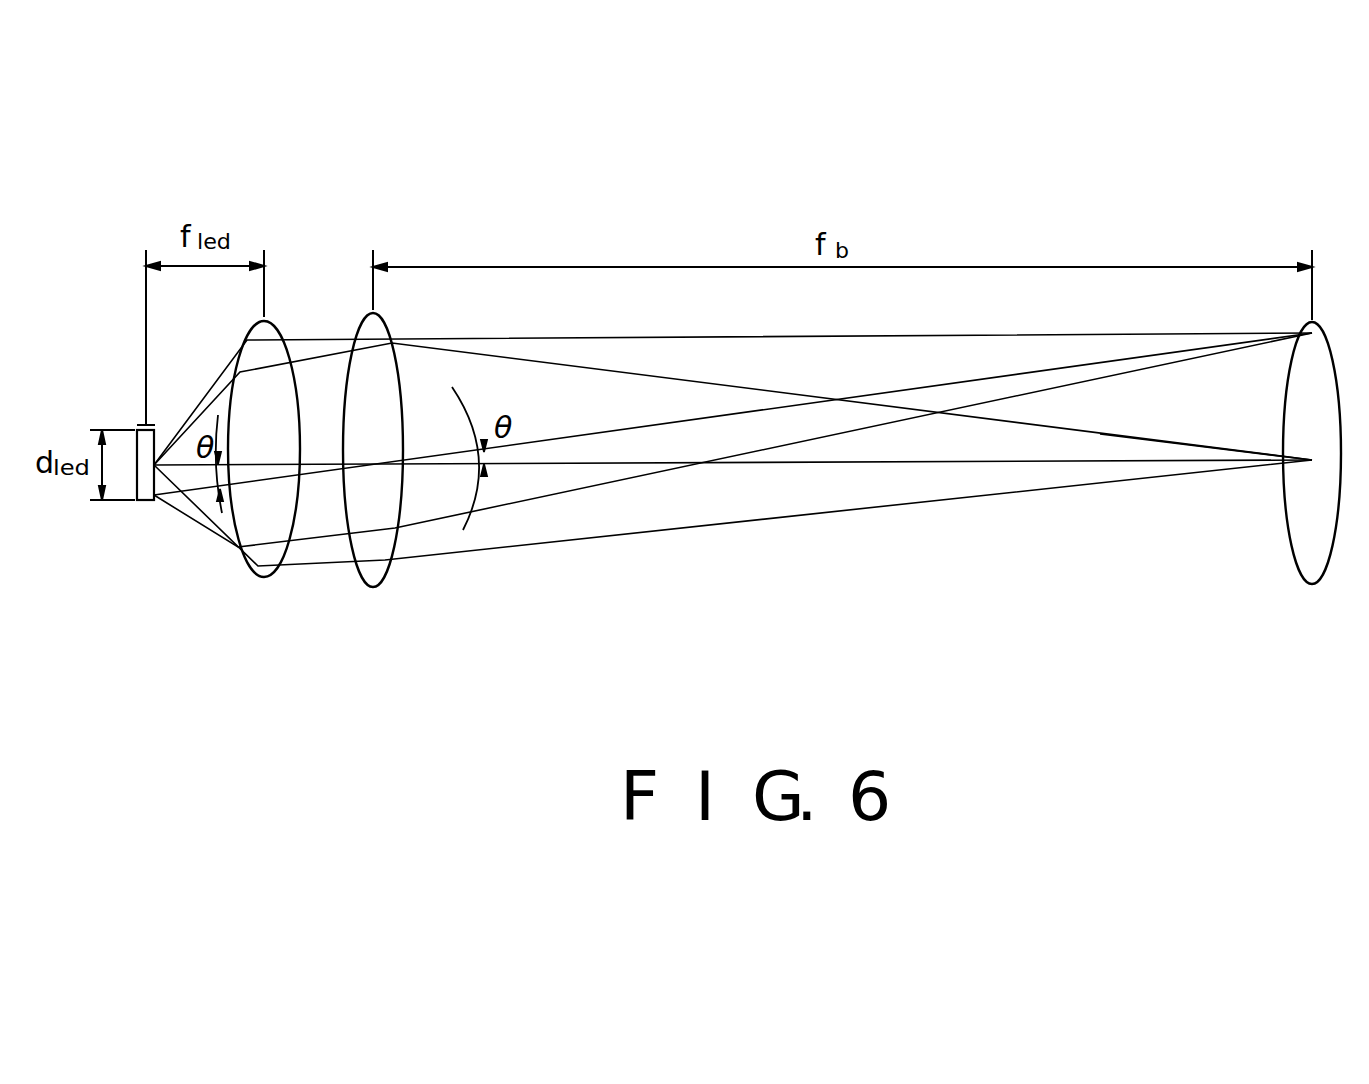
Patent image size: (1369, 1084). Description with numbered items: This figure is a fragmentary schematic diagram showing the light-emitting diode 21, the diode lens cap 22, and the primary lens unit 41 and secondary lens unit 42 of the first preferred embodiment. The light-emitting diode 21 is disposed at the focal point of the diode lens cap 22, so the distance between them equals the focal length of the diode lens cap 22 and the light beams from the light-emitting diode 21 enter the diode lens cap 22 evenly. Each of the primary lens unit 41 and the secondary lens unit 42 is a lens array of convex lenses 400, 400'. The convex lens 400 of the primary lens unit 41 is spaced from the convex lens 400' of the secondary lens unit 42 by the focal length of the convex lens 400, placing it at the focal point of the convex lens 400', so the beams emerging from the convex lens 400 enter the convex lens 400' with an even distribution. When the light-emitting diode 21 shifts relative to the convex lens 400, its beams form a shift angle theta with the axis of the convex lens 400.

The light-emitting diode 21 is at (146, 492).
The diode lens cap 22 is at (260, 572).
The primary lens unit 41 is at (373, 605).
The secondary lens unit 42 is at (1312, 605).
The convex lens 400 is at (733, 489).
The convex lens 400' is at (1206, 532).